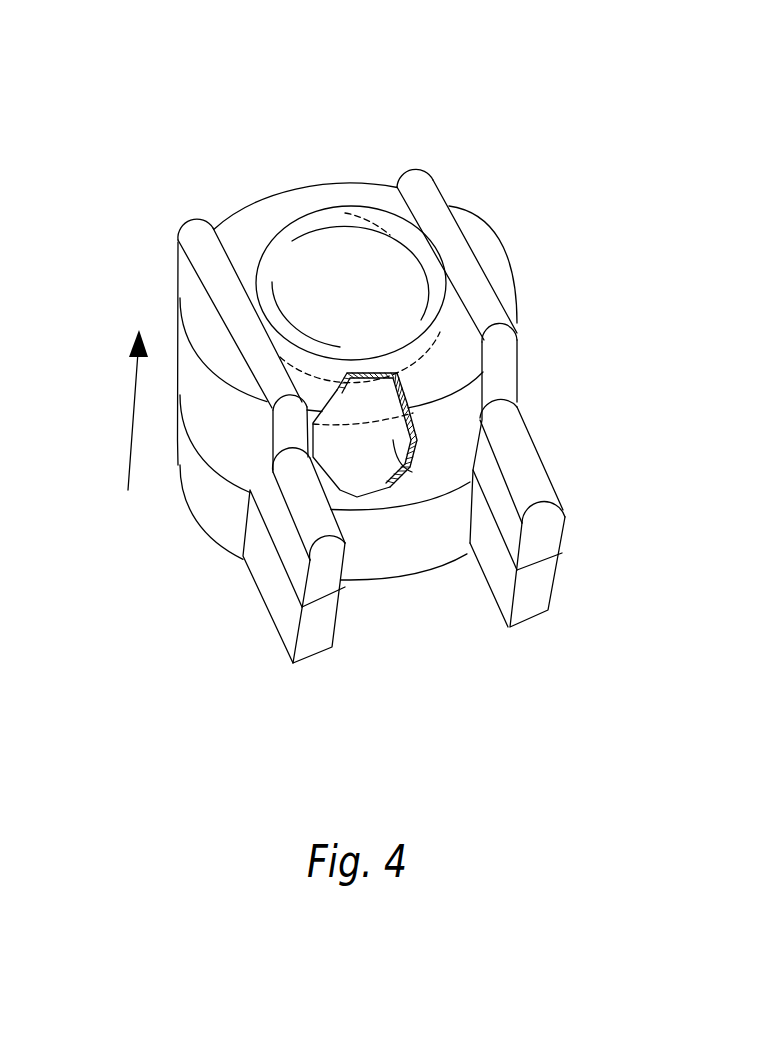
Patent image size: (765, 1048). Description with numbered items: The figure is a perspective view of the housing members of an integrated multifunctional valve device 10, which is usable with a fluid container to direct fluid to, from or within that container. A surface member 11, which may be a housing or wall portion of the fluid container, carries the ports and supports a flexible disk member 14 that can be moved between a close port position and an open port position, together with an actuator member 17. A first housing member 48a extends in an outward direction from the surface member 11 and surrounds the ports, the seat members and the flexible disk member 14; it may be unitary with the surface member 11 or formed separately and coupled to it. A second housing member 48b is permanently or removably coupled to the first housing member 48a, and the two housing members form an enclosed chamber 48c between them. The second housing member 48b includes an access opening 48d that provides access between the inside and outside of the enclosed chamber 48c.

The integrated multifunctional valve device 10 is at (347, 36).
The surface member 11 is at (388, 592).
The flexible disk member 14 is at (350, 474).
The actuator member 17 is at (350, 230).
The first housing member 48a is at (220, 516).
The second housing member 48b is at (184, 358).
The enclosed chamber 48c is at (418, 446).
The access opening 48d is at (442, 270).